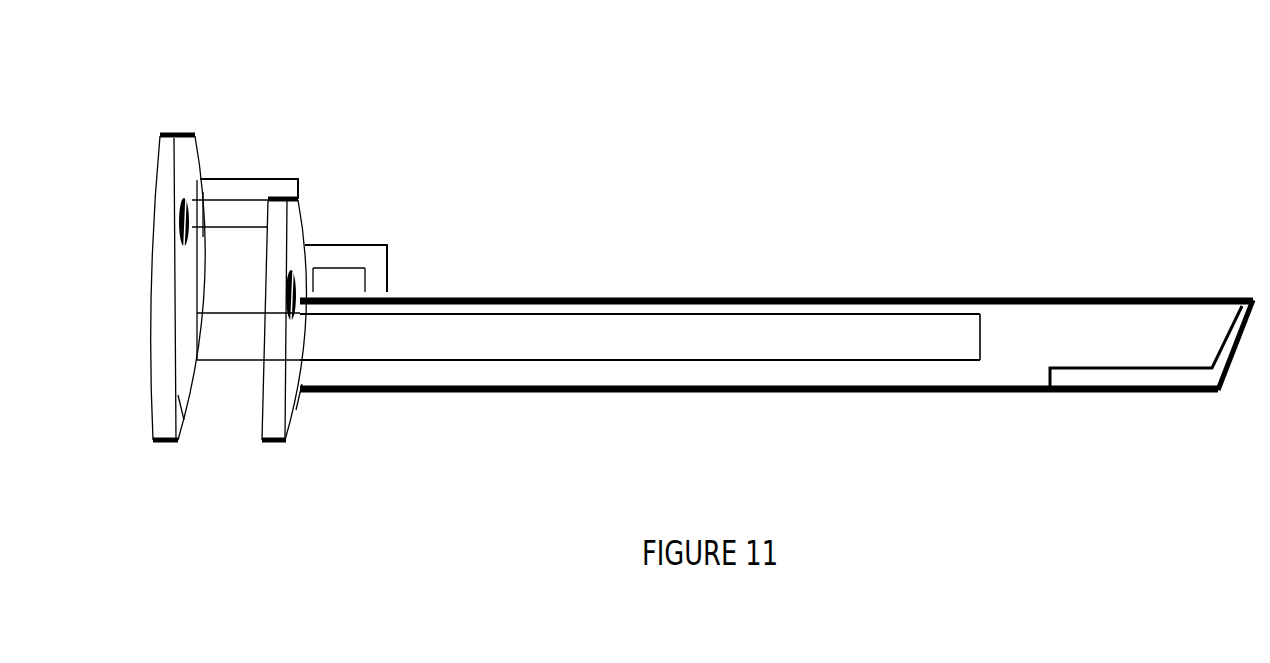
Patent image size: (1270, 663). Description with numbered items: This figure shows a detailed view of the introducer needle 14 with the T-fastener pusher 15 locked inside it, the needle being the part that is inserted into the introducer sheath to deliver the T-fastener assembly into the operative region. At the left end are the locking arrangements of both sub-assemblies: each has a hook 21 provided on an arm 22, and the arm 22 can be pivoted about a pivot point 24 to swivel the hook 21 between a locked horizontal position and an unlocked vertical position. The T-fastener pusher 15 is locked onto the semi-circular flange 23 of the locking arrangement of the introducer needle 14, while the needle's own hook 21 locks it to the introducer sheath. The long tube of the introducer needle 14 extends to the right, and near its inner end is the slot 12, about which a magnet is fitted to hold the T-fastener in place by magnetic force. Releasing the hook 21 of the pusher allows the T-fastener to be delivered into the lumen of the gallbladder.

The slot 12 is at (1118, 374).
The introducer needle 14 is at (633, 291).
The T-fastener pusher 15 is at (773, 323).
The hook 21 is at (300, 176).
The arm 22 is at (244, 175).
The semi-circular flange 23 is at (173, 161).
The pivot point 24 is at (179, 395).